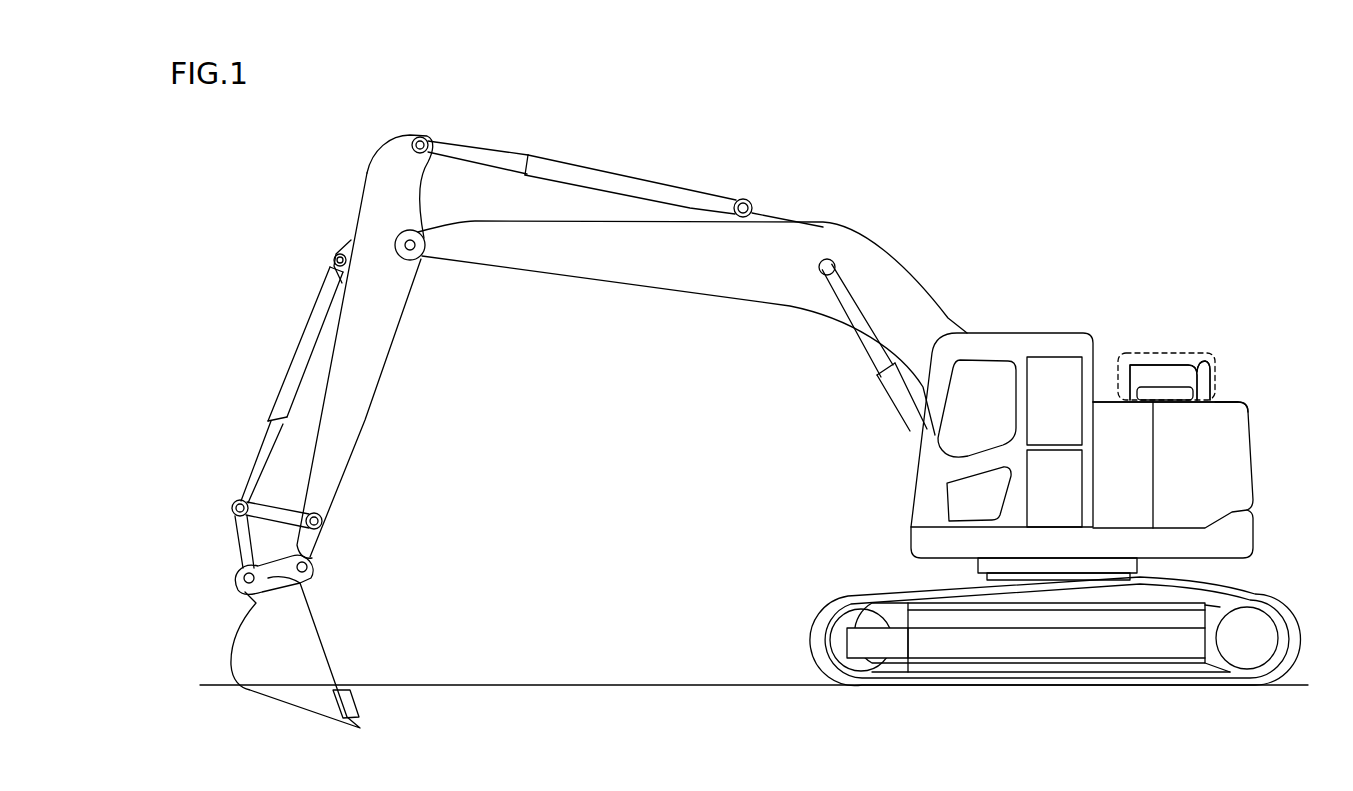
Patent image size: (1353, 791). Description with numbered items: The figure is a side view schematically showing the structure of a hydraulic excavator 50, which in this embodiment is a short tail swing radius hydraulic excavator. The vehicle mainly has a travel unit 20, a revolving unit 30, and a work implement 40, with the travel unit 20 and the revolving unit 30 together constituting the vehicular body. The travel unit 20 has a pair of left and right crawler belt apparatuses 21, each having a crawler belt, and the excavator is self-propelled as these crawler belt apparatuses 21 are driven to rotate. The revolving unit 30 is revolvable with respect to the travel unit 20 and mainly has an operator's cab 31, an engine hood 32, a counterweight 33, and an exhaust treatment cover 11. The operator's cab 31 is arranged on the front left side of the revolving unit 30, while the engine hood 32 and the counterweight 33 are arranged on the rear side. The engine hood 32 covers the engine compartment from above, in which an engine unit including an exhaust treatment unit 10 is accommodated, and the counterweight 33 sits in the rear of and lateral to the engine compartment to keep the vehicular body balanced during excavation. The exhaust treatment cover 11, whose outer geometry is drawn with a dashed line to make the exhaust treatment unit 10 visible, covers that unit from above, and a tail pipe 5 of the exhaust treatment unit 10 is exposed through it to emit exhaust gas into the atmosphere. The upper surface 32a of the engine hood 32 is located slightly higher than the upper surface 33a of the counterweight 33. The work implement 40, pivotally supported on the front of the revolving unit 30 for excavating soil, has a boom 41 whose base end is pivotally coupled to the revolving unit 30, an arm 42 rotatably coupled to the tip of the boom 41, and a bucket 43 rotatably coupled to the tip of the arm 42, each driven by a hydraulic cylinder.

The hydraulic excavator 50 is at (1150, 173).
The work implement 40 is at (857, 205).
The boom 41 is at (673, 263).
The arm 42 is at (363, 357).
The bucket 43 is at (292, 645).
The revolving unit 30 is at (1090, 330).
The operator's cab 31 is at (1011, 347).
The engine hood 32 is at (1157, 387).
The upper surface of engine hood 32a is at (1222, 397).
The counterweight 33 is at (1208, 455).
The upper surface of counterweight 33a is at (1237, 400).
The tail pipe 5 is at (1207, 357).
The exhaust treatment unit 10 is at (1202, 337).
The exhaust treatment cover 11 is at (1140, 352).
The travel unit 20 is at (1267, 593).
The crawler belt apparatus 21 is at (848, 612).